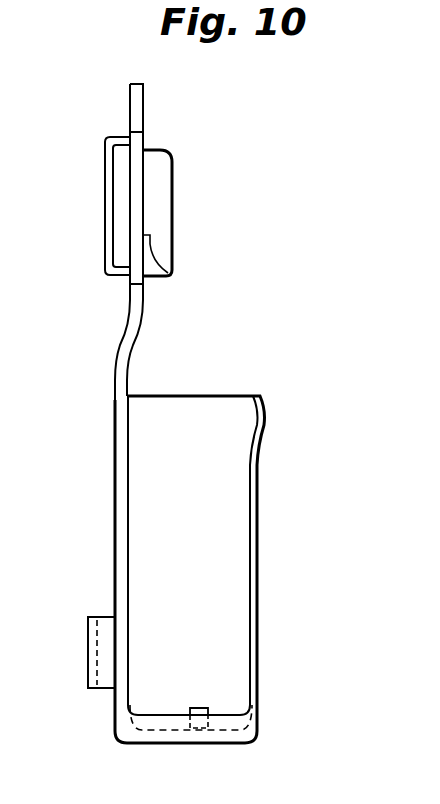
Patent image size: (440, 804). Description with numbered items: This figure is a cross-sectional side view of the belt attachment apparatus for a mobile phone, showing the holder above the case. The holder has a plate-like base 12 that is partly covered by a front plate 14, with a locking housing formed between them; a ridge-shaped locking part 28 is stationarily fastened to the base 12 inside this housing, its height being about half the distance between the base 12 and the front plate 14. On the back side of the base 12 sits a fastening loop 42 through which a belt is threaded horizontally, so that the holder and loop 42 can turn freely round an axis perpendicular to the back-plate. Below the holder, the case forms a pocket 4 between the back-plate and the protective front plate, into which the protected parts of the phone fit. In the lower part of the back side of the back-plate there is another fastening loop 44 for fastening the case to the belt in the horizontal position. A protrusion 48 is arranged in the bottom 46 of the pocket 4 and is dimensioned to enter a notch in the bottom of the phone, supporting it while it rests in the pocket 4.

The pocket 4 is at (228, 545).
The base 12 is at (136, 201).
The front plate 14 is at (172, 232).
The locking part 28 is at (163, 271).
The fastening loop 42 is at (108, 210).
The fastening loop 44 is at (88, 650).
The bottom 46 is at (155, 717).
The protrusion 48 is at (205, 708).